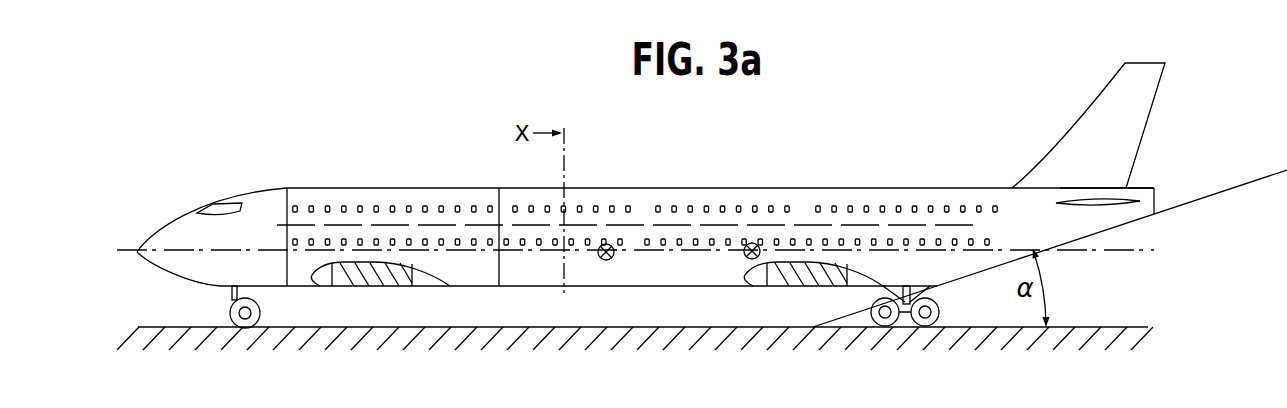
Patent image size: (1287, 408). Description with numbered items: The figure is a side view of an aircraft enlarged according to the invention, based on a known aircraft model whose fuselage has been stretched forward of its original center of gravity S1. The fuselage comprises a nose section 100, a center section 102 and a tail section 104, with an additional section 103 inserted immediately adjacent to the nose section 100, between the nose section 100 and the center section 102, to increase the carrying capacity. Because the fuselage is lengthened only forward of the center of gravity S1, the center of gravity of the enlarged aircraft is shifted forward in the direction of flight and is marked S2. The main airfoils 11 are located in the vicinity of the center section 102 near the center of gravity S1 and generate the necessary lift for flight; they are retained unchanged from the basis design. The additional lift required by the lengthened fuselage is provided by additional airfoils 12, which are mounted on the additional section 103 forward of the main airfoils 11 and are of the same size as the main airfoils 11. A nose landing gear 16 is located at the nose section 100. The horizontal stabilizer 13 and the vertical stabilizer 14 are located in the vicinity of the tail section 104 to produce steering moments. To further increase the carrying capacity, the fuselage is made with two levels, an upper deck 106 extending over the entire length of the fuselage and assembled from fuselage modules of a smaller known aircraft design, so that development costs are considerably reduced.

The nose section 100 is at (246, 188).
The additional section 103 is at (368, 188).
The center section 102 is at (683, 188).
The upper deck 106 is at (870, 188).
The tail section 104 is at (1027, 205).
The vertical stabilizer 14 is at (1140, 109).
The horizontal stabilizer 13 is at (1132, 198).
The nose landing gear 16 is at (232, 297).
The additional airfoils 12 is at (374, 281).
The airfoils 11 is at (791, 279).
The center of gravity S2 is at (604, 244).
The center of gravity S1 is at (749, 243).